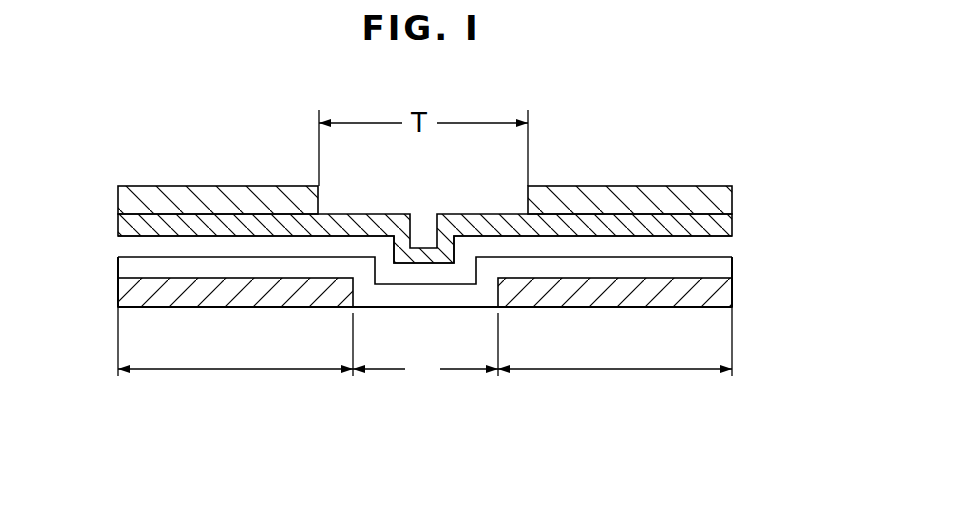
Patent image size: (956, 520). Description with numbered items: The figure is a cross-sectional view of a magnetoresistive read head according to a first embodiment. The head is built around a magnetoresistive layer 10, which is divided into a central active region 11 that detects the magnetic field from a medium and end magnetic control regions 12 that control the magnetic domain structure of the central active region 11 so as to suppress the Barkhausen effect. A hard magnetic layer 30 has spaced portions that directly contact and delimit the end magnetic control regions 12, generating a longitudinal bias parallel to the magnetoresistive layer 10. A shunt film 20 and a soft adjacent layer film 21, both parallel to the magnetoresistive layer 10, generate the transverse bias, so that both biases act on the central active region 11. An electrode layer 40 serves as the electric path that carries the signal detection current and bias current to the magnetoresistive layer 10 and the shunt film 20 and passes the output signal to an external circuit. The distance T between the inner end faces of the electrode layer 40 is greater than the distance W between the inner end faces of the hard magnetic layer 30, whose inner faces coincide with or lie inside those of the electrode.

The magnetoresistive layer 10 is at (140, 268).
The central active region 11 is at (460, 370).
The end magnetic control regions 12 is at (275, 370).
The shunt film 20 is at (132, 245).
The soft adjacent layer film 21 is at (132, 226).
The hard magnetic layer 30 is at (161, 305).
The electrode layer 40 is at (166, 196).